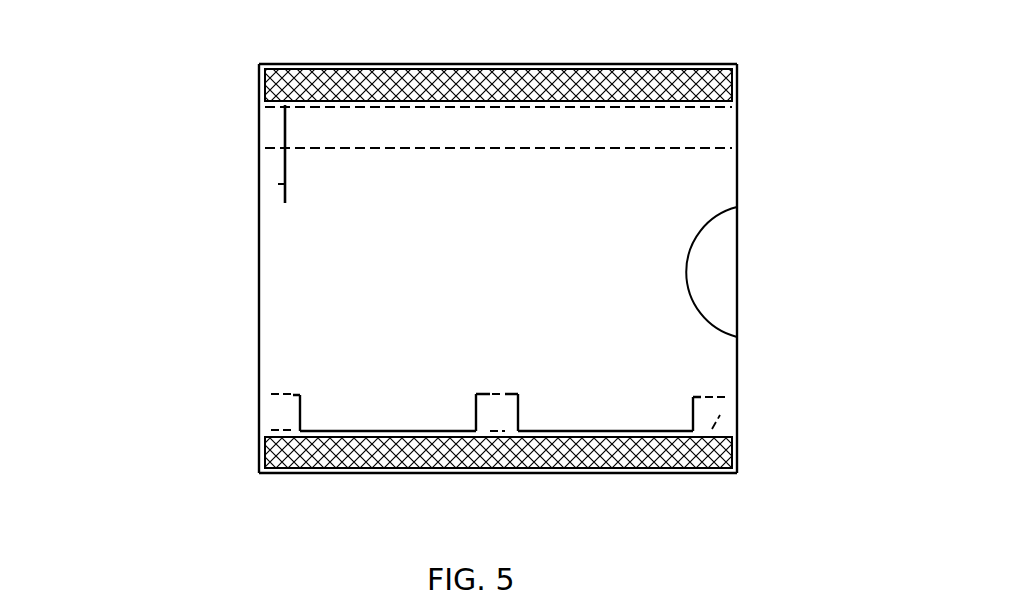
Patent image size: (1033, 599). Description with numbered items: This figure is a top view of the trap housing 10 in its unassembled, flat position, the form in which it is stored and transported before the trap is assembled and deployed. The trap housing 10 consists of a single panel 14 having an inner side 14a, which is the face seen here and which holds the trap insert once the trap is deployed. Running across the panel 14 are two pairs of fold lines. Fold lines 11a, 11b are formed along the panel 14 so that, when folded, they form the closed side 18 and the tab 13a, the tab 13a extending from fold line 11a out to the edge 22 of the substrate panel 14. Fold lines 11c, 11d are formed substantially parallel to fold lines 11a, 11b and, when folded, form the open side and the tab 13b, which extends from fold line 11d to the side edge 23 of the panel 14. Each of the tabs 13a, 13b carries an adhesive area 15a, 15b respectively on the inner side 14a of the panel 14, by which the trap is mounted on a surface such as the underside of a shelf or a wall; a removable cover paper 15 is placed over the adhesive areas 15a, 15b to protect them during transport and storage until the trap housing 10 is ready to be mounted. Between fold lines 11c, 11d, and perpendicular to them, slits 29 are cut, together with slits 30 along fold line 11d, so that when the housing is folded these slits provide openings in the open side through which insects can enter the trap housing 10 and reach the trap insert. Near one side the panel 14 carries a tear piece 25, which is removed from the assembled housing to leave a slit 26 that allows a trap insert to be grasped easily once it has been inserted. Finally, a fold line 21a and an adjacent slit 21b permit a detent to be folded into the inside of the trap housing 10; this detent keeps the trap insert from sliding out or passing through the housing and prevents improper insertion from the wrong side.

The trap housing 10 is at (203, 302).
The fold line 11a is at (721, 112).
The fold line 11b is at (721, 150).
The fold line 11c is at (726, 400).
The fold line 11d is at (716, 426).
The tab 13a is at (613, 64).
The tab 13b is at (606, 474).
The panel 14 is at (256, 338).
The inner side 14a is at (270, 262).
The removable cover paper 15 is at (266, 83).
The adhesive area 15a is at (540, 80).
The adhesive area 15b is at (418, 462).
The closed side 18 is at (651, 125).
The fold line 21a is at (273, 184).
The slit 21b is at (283, 166).
The edge 22 is at (461, 63).
The side edge 23 is at (355, 476).
The tear piece 25 is at (741, 292).
The slit 26 is at (719, 222).
The slits 29 is at (470, 408).
The slits 30 is at (394, 430).